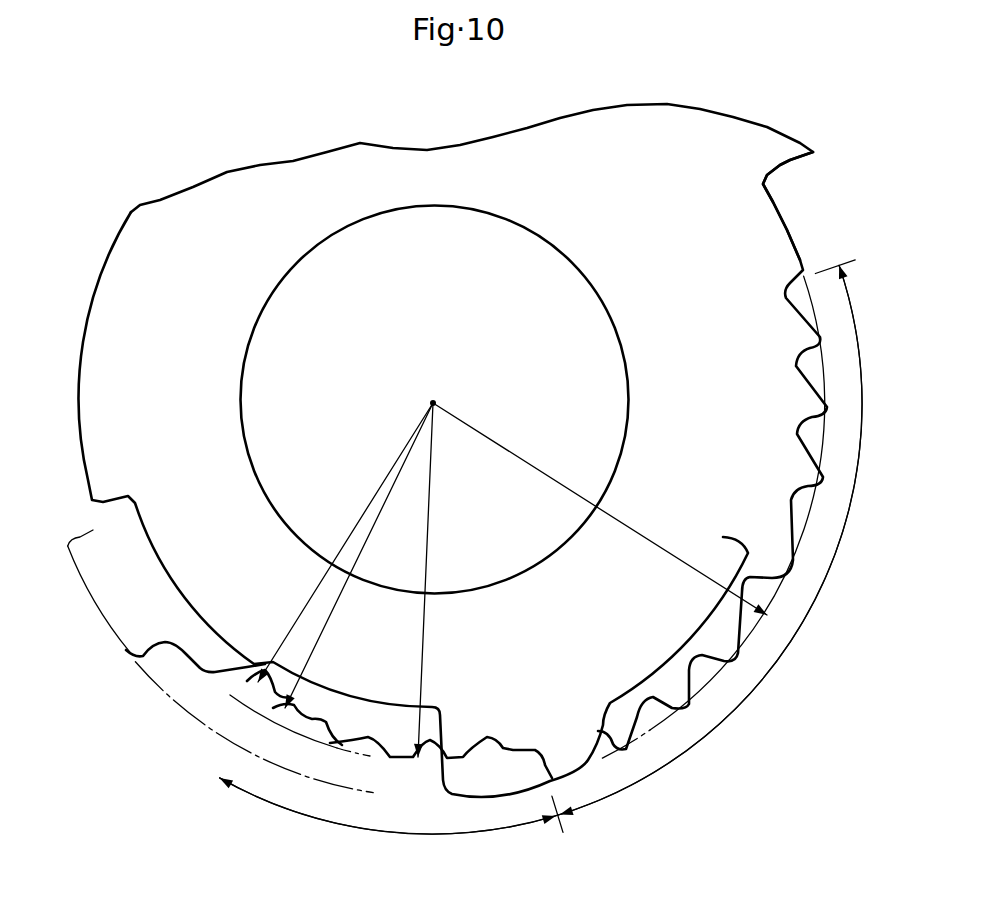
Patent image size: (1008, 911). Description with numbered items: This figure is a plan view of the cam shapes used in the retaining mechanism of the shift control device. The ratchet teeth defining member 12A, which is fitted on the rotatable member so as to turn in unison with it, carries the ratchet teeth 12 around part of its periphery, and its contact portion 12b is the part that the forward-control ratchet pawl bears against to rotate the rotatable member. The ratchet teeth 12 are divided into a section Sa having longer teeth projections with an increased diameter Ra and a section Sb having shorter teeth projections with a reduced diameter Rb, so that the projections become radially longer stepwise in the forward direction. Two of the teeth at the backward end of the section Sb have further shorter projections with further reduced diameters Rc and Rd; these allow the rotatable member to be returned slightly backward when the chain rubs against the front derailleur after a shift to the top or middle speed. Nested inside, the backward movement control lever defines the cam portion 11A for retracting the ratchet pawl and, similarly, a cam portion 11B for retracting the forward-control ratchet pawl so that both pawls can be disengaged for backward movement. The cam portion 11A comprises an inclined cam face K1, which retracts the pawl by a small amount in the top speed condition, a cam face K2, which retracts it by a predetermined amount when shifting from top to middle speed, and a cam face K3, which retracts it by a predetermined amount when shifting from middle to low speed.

The ratchet teeth 12 is at (664, 745).
The ratchet teeth defining member 12A is at (655, 418).
The contact portion 12b is at (792, 160).
The cam portion 11A is at (218, 729).
The cam portion 11B is at (497, 800).
The inclined cam face K1 is at (265, 665).
The cam face K2 is at (190, 670).
The cam face K3 is at (127, 656).
The increased diameter Ra is at (643, 537).
The reduced diameter Rb is at (424, 630).
The further reduced diameter Rc is at (327, 622).
The further reduced diameter Rd is at (303, 611).
The section having longer teeth projections Sa is at (806, 619).
The section having shorter teeth projections Sb is at (334, 824).